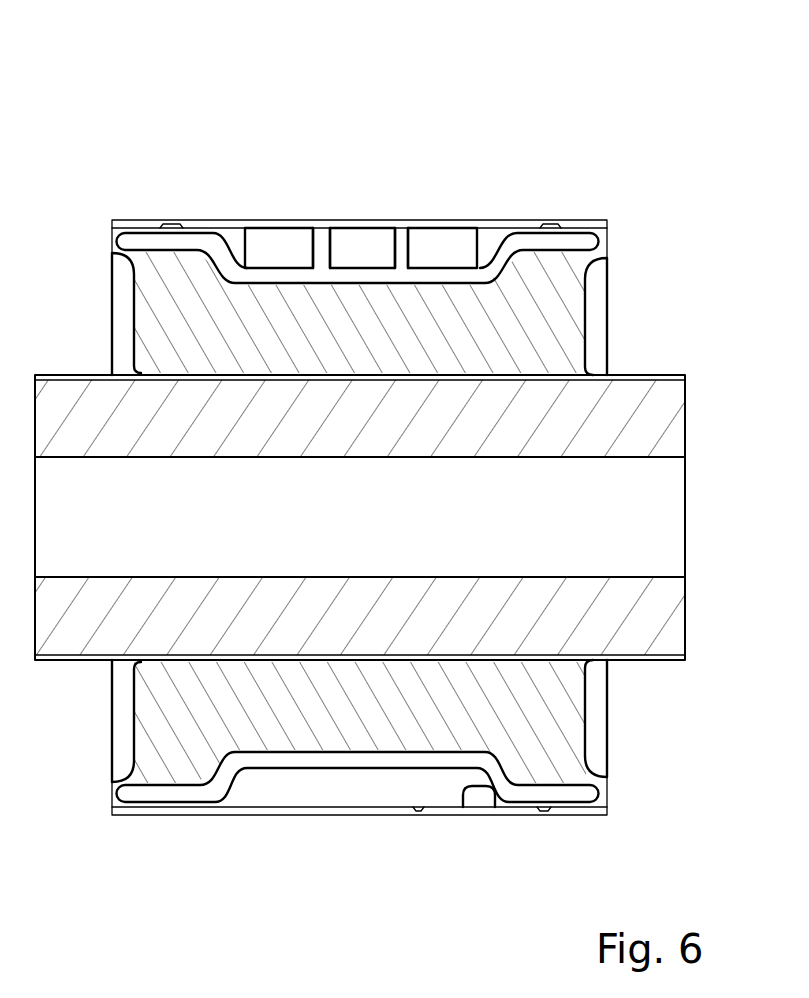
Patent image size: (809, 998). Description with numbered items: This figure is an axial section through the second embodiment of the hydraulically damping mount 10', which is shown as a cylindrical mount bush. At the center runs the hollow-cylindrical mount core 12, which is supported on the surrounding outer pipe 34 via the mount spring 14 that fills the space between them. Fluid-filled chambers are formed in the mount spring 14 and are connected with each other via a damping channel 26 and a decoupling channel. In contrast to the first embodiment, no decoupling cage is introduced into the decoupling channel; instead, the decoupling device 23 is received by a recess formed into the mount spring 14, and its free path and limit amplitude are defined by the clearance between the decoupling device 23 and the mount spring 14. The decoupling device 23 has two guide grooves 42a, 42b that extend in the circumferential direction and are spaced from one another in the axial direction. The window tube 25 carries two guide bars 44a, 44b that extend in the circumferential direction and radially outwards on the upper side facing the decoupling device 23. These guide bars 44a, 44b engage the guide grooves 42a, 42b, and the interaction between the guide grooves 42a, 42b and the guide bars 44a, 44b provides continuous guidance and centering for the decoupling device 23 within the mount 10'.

The hydraulically damping mount 10' is at (431, 418).
The mount core 12 is at (687, 418).
The mount spring 14 is at (586, 300).
The decoupling device 23 is at (362, 245).
The window tube 25 is at (544, 237).
The damping channel 26 is at (481, 797).
The outer pipe 34 is at (185, 220).
The guide groove 42a is at (311, 243).
The guide groove 42b is at (414, 245).
The guide bar 44a is at (322, 243).
The guide bar 44b is at (403, 243).